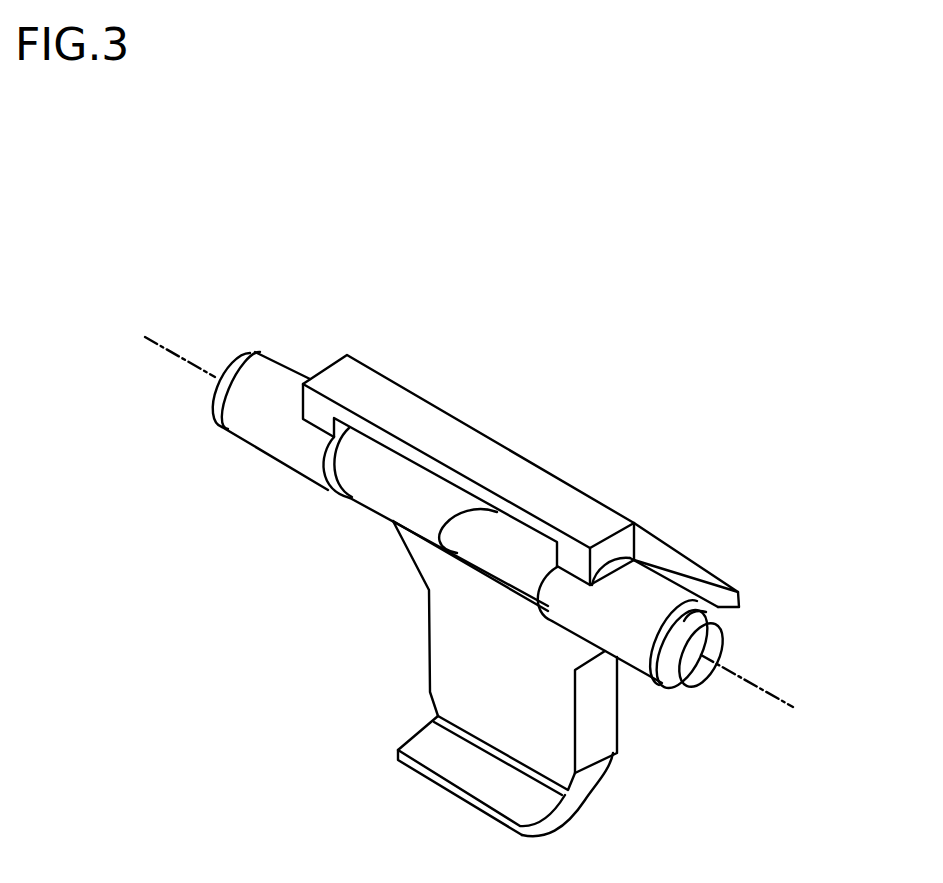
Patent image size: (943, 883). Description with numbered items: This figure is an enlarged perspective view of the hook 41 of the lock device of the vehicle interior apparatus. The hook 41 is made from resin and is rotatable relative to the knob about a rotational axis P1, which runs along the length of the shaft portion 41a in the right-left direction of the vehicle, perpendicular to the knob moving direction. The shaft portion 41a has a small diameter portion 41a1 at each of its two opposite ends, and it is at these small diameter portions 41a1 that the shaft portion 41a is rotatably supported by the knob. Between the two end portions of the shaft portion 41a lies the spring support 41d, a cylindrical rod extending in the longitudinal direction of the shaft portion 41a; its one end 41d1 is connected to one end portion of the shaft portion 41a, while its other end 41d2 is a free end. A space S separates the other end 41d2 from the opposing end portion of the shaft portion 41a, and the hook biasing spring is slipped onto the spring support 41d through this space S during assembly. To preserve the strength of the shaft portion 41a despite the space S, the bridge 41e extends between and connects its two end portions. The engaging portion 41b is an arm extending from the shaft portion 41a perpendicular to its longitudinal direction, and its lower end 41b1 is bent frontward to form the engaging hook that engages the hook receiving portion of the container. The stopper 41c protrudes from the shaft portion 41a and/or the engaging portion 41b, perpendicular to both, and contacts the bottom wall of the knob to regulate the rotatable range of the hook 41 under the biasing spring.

The hook 41 is at (441, 326).
The shaft portion 41a is at (287, 373).
The small diameter portion 41a1 is at (238, 370).
The engaging portion 41b is at (602, 720).
The lower end of the engaging portion 41b1 is at (562, 818).
The stopper 41c is at (658, 553).
The spring support 41d is at (373, 484).
The one end of the spring support 41d1 is at (330, 463).
The other end of the spring support 41d2 is at (445, 527).
The bridge 41e is at (521, 474).
The space S is at (524, 562).
The rotational axis P1 is at (773, 698).